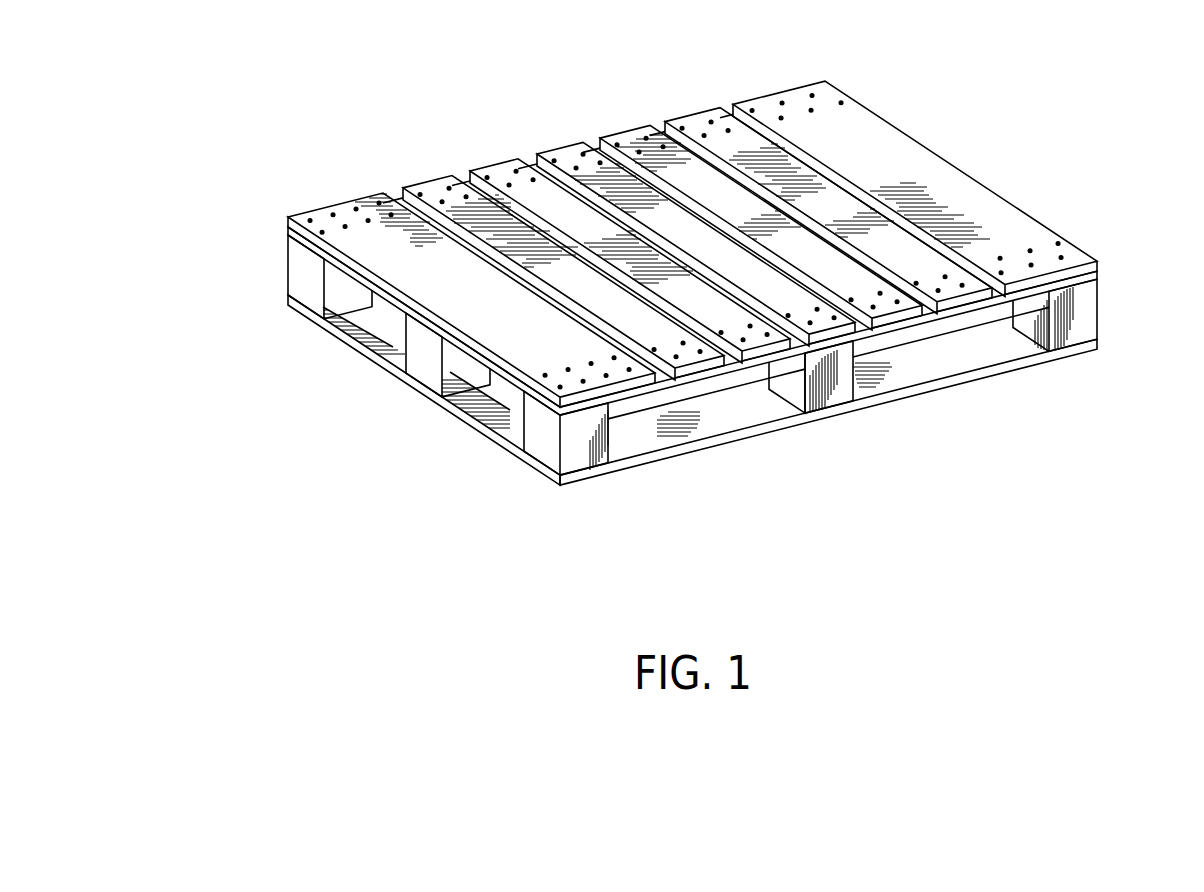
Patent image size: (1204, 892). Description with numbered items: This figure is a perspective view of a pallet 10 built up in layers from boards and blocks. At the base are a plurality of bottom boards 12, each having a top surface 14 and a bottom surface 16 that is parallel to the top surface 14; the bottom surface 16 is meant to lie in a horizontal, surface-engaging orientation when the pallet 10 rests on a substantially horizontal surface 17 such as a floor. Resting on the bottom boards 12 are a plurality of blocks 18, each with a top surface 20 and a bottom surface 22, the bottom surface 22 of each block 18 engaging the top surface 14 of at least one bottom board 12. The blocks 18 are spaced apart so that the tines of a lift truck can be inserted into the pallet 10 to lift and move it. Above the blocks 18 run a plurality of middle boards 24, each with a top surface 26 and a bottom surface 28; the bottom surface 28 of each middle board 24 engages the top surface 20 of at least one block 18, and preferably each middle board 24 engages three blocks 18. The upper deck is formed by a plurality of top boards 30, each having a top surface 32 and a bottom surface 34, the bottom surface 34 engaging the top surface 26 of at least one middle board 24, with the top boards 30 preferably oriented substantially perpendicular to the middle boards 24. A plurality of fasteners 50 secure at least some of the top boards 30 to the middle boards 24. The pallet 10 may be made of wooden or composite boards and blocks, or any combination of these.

The pallet 10 is at (322, 150).
The bottom boards 12 is at (480, 432).
The top surface 14 is at (360, 338).
The bottom surface 16 is at (397, 373).
The substantially horizontal surface 17 is at (1178, 313).
The blocks 18 is at (292, 276).
The top surface 20 is at (660, 466).
The bottom surface 22 is at (577, 473).
The middle boards 24 is at (290, 228).
The top surface 26 is at (420, 190).
The bottom surface 28 is at (741, 372).
The top boards 30 is at (590, 145).
The top surface 32 is at (880, 130).
The bottom surface 34 is at (1063, 323).
The fasteners 50 is at (713, 120).